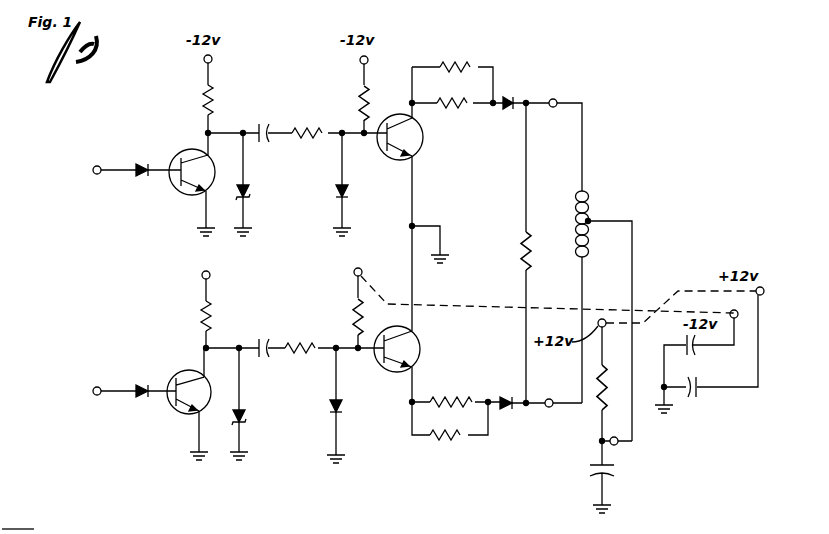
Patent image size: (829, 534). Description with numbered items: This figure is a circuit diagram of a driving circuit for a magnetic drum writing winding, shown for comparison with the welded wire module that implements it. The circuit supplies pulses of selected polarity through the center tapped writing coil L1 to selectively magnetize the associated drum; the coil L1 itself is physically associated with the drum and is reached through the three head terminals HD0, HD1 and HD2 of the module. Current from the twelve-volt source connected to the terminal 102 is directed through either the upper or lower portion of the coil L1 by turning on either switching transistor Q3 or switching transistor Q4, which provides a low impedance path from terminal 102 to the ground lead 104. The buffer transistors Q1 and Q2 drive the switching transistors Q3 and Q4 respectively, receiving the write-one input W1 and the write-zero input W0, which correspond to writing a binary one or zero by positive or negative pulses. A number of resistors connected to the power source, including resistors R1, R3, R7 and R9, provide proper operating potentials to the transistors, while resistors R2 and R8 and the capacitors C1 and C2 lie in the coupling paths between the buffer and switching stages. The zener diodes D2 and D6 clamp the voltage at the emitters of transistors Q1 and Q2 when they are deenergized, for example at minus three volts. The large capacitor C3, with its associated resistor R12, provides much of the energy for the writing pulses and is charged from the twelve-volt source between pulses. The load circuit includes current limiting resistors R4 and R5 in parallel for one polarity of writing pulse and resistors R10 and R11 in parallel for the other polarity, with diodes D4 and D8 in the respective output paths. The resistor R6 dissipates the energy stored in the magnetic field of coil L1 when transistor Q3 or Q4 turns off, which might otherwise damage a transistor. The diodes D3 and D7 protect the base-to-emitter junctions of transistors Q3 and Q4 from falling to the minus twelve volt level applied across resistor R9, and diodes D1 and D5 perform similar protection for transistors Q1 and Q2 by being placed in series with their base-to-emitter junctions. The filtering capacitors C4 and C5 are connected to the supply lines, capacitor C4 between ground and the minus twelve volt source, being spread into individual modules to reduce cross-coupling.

The resistor R1 is at (212, 117).
The resistor R2 is at (324, 127).
The resistor R3 is at (368, 114).
The current limiting resistor R4 is at (476, 66).
The current limiting resistor R5 is at (474, 101).
The resistor R6 is at (530, 255).
The resistor R7 is at (212, 327).
The resistor R8 is at (317, 344).
The resistor R9 is at (354, 323).
The current limiting resistor R10 is at (472, 397).
The current limiting resistor R11 is at (468, 438).
The resistor R12 is at (598, 406).
The capacitor C1 is at (273, 110).
The capacitor C2 is at (268, 337).
The capacitor C3 is at (617, 475).
The filtering capacitor C4 is at (702, 353).
The capacitor C5 is at (703, 398).
The diode D1 is at (145, 182).
The zener diode D2 is at (248, 192).
The diode D3 is at (353, 191).
The diode D4 is at (510, 100).
The diode D5 is at (145, 401).
The zener diode D6 is at (248, 412).
The diode D7 is at (350, 419).
The diode D8 is at (512, 381).
The buffer transistor Q1 is at (190, 196).
The buffer transistor Q2 is at (186, 424).
The switching transistor Q3 is at (420, 151).
The switching transistor Q4 is at (420, 361).
The writing coil L1 is at (592, 196).
The write 1 input W1 is at (92, 171).
The write 0 input W0 is at (90, 392).
The head terminal HD0 is at (547, 408).
The head terminal HD1 is at (560, 102).
The head terminal HD2 is at (620, 446).
The terminal 102 is at (612, 300).
The ground lead 104 is at (443, 241).